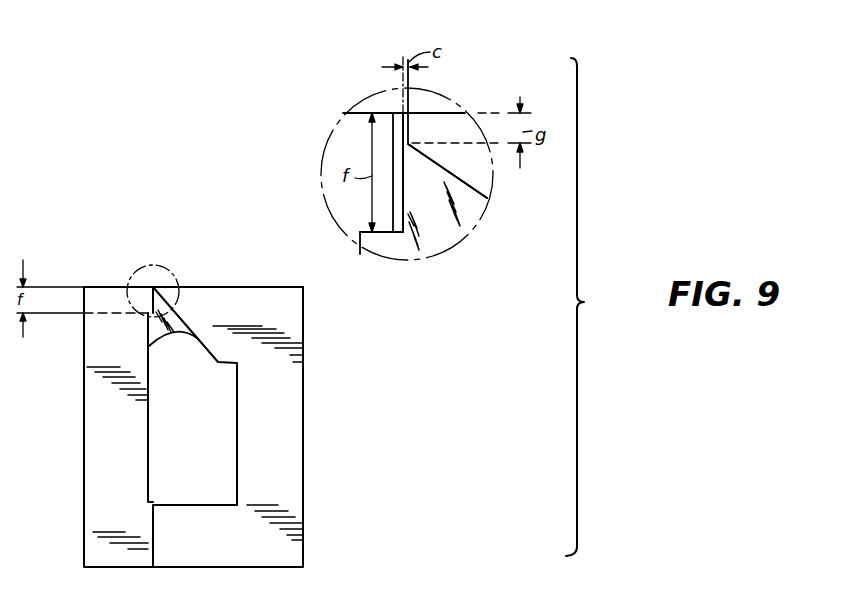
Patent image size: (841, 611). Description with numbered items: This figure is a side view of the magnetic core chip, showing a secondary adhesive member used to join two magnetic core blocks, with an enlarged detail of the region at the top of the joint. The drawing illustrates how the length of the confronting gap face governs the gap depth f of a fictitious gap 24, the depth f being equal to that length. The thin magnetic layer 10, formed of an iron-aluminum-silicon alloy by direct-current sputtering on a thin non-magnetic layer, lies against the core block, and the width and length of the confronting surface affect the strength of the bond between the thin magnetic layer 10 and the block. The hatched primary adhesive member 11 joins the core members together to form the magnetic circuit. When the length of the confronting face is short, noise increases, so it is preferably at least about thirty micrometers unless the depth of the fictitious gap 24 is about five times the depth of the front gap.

The thin magnetic layer 10 is at (406, 218).
The primary adhesive member 11 is at (458, 224).
The fictitious gap 24 is at (393, 238).